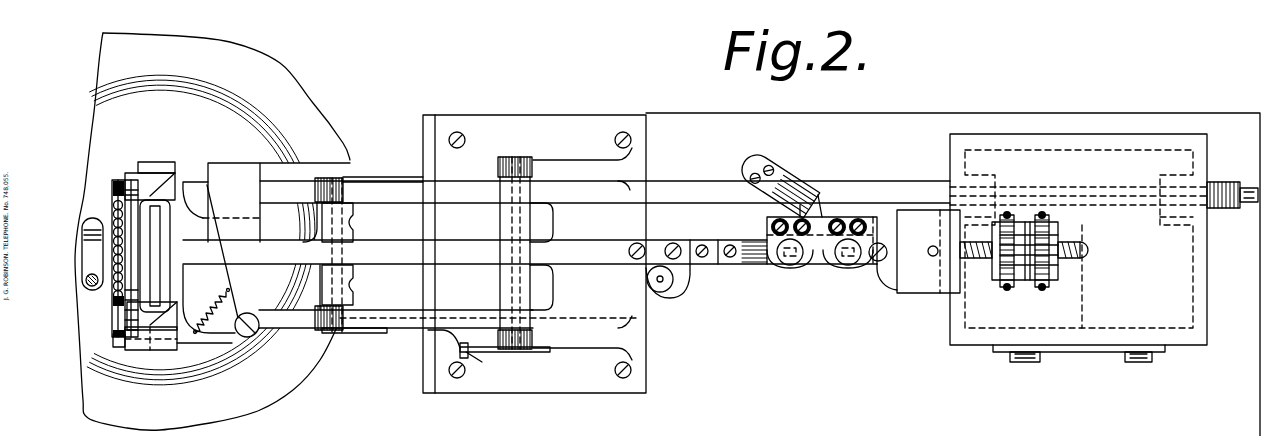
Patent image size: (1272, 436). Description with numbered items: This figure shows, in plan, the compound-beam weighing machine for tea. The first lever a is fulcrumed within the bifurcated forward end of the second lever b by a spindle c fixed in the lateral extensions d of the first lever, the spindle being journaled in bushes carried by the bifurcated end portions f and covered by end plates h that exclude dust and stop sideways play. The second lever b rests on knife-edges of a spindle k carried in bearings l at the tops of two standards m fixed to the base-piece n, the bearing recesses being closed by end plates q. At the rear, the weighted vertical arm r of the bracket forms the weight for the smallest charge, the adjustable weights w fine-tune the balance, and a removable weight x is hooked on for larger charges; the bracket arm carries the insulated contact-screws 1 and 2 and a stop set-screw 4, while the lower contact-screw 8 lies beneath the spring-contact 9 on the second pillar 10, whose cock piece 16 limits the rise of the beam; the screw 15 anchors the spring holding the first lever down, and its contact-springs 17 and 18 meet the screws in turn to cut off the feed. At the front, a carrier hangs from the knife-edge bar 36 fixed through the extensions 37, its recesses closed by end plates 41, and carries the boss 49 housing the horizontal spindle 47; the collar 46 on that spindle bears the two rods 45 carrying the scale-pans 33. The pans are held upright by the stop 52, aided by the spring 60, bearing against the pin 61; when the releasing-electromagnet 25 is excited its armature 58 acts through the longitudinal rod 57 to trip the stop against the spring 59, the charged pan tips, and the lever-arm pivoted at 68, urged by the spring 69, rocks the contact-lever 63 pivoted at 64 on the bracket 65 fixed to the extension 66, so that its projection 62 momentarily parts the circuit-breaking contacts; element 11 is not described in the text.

The scale-pan 33 is at (212, 231).
The boss or collar 46 is at (91, 254).
The stop 52 is at (116, 184).
The spring 60 is at (114, 214).
The spring 69 is at (131, 250).
The rod 45 is at (112, 296).
The horizontal spindle 47 is at (112, 312).
The pin / spring-contacts 61 is at (113, 337).
The end plates 41 is at (160, 164).
The extensions 37 is at (152, 255).
The bar 36 is at (176, 265).
The plate 11 is at (151, 348).
The insulated projection 62 is at (170, 326).
The boss 49 is at (214, 218).
The bracket 65 is at (231, 251).
The pivot 64 is at (261, 338).
The contact-lever 63 is at (300, 330).
The first lever a is at (530, 213).
The bifurcated end portions f is at (604, 254).
The longitudinal rod 57 is at (679, 197).
The end plates h is at (344, 178).
The extension 66 is at (380, 180).
The spindle c is at (342, 255).
The lateral extensions d is at (360, 285).
The second lever b is at (535, 223).
The spindle k is at (541, 287).
The end plates q is at (520, 157).
The standards m is at (582, 254).
The pivot 68 is at (455, 350).
The base-piece n is at (691, 282).
The vertically-adjustable screw 15 is at (676, 278).
The contact-spring 18 is at (757, 263).
The lower contact-screw 8 is at (832, 216).
The contact-screw 2 is at (788, 266).
The contact-screw 1 is at (850, 266).
The contact-spring 17 is at (826, 260).
The set-screw stop 4 is at (878, 243).
The bearings l is at (878, 216).
The second pillar 10 is at (752, 158).
The spring-contact 9 is at (798, 184).
The cock piece 16 is at (807, 205).
The vertical arm of bracket r is at (928, 251).
The removable weight x is at (947, 293).
The armature 58 is at (1075, 185).
The adjustable weights w is at (1030, 290).
The spring 59 is at (1228, 182).
The releasing-electromagnet 25 is at (1095, 330).